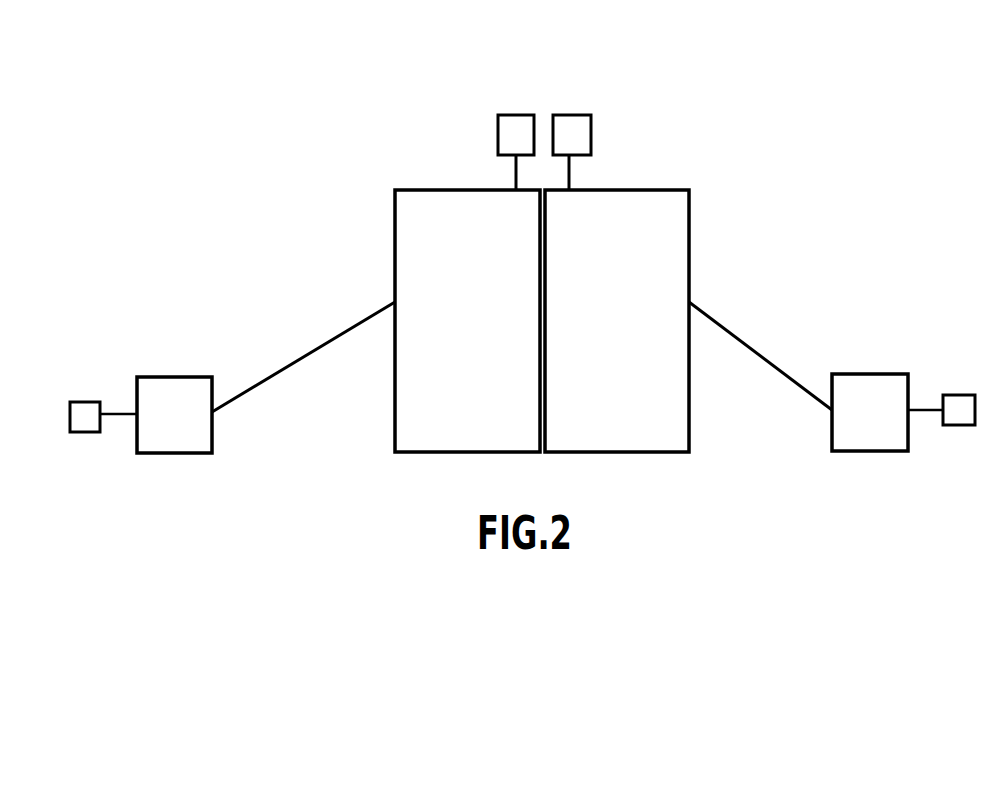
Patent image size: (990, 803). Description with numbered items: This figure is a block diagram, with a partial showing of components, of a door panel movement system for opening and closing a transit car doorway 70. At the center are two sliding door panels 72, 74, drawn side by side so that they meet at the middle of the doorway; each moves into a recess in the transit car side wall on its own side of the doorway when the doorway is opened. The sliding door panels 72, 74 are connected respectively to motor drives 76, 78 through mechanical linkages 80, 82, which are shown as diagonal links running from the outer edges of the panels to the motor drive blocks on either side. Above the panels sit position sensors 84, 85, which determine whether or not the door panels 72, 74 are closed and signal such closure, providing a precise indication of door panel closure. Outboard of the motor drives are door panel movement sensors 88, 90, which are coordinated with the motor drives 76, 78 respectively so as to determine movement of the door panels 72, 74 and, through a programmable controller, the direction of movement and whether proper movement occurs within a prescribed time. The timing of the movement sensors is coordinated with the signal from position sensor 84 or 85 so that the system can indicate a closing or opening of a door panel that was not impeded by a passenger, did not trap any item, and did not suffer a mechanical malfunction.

The transit car doorway 70 is at (360, 494).
The sliding door panel 72 is at (418, 210).
The sliding door panel 74 is at (668, 200).
The motor drive 76 is at (155, 377).
The motor drive 78 is at (850, 374).
The mechanical linkage 80 is at (303, 353).
The mechanical linkage 82 is at (752, 349).
The position sensor 84 is at (503, 115).
The position sensor 85 is at (570, 115).
The door panel movement sensor 88 is at (70, 410).
The door panel movement sensor 90 is at (953, 393).